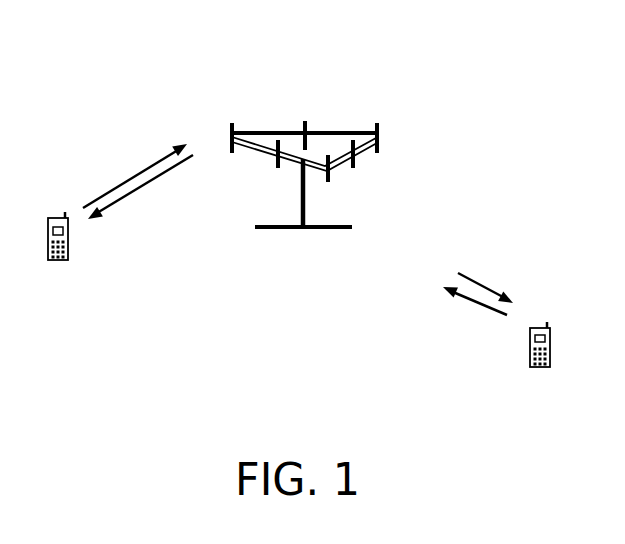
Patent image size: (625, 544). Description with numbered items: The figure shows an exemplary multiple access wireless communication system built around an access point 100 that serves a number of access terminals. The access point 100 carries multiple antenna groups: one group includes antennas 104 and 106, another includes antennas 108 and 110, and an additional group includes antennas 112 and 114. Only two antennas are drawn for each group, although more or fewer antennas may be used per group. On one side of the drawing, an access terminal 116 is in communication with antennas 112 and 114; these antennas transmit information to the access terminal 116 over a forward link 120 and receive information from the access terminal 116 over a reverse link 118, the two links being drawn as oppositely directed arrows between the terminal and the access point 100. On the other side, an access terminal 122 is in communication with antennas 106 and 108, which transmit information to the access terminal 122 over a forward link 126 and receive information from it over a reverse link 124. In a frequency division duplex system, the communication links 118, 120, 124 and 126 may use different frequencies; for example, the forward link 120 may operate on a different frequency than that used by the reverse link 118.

The access point 100 is at (260, 228).
The antenna 104 is at (329, 179).
The antenna 106 is at (354, 165).
The antenna 108 is at (378, 147).
The antenna 110 is at (307, 122).
The antenna 112 is at (233, 133).
The antenna 114 is at (278, 166).
The access terminal 116 is at (61, 220).
The reverse link 118 is at (137, 174).
The forward link 120 is at (147, 184).
The access terminal 122 is at (543, 323).
The reverse link 124 is at (467, 297).
The forward link 126 is at (488, 290).